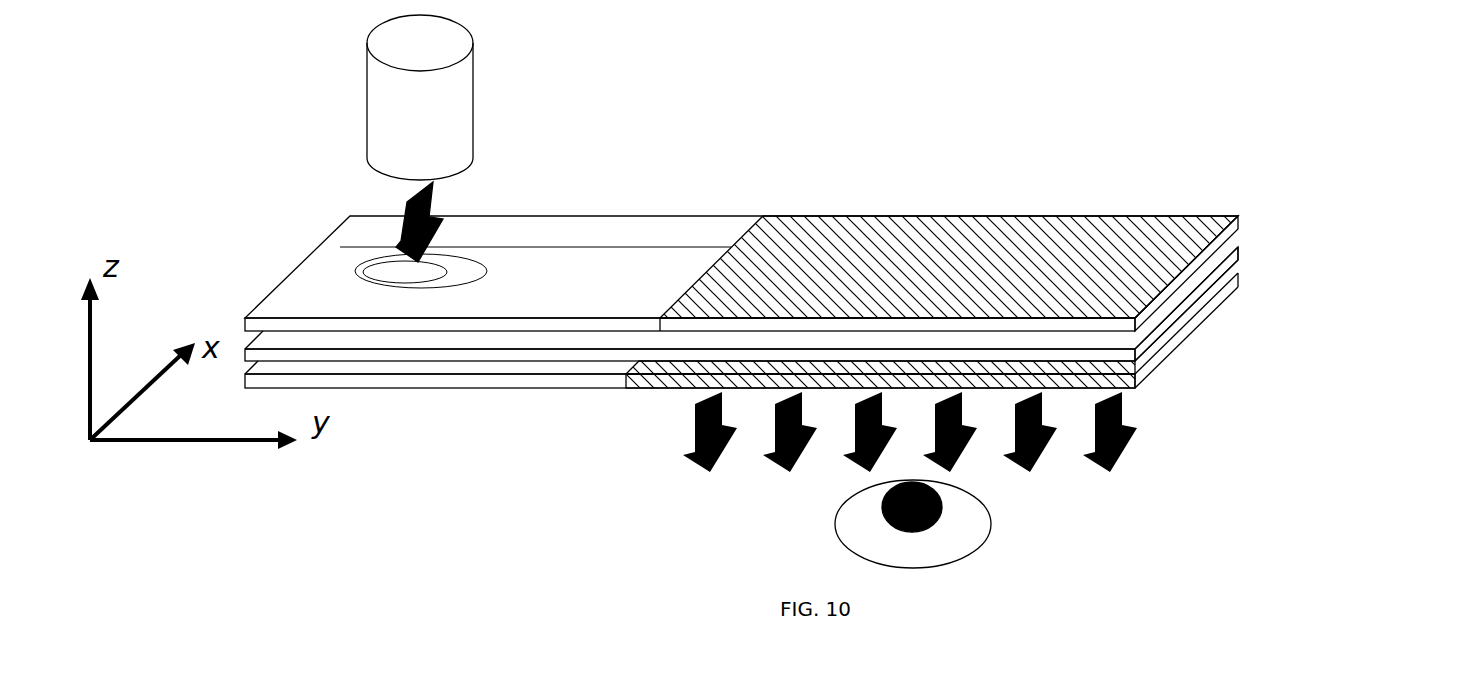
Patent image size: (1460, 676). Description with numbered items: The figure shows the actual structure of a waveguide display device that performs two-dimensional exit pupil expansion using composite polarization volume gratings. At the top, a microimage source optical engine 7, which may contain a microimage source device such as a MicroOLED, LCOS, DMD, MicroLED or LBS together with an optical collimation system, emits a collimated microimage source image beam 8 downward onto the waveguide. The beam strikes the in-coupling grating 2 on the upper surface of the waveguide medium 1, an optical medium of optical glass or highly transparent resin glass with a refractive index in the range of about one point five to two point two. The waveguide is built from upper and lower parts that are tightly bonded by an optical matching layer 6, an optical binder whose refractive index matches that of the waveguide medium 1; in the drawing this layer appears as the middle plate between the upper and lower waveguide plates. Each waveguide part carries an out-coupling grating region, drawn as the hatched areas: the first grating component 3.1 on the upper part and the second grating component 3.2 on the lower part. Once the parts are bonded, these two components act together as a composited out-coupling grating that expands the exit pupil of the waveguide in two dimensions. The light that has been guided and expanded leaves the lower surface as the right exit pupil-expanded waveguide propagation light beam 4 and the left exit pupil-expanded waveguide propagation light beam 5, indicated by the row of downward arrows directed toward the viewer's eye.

The waveguide medium 1 is at (245, 380).
The in-coupling grating 2 is at (440, 273).
The first grating component 3.1 is at (1057, 252).
The second grating component 3.2 is at (1170, 360).
The right exit pupil-expanded waveguide propagation light beam 4 is at (1135, 438).
The left exit pupil-expanded waveguide propagation light beam 5 is at (1135, 438).
The optical matching layer 6 is at (1240, 250).
The microimage source optical engine 7 is at (473, 50).
The microimage source image beam 8 is at (437, 215).